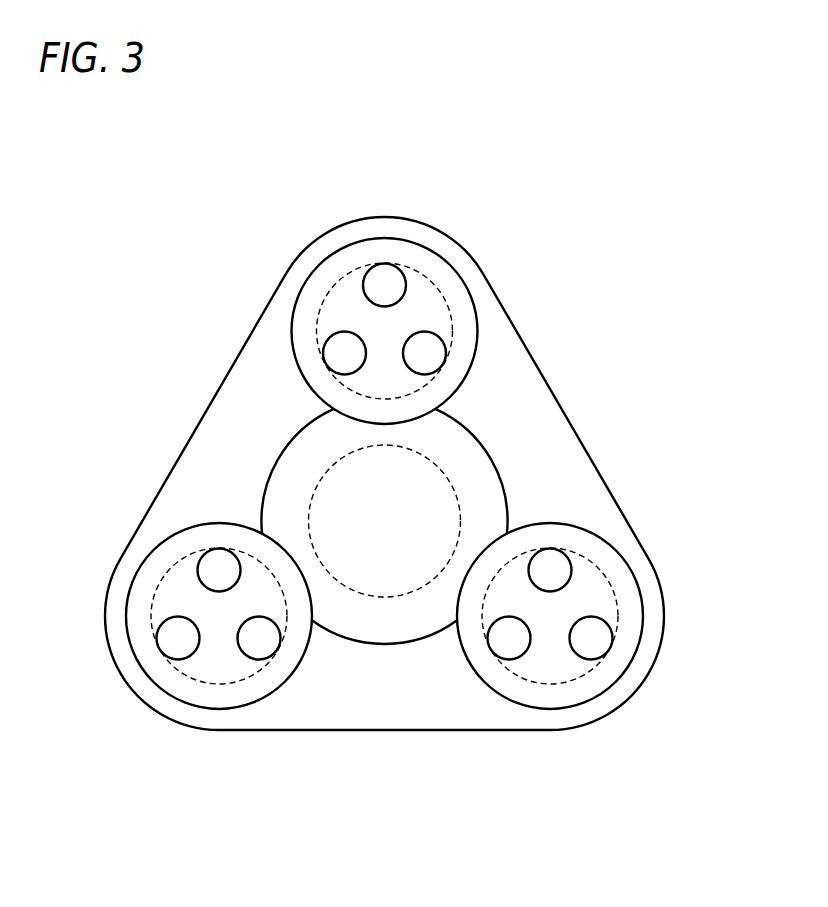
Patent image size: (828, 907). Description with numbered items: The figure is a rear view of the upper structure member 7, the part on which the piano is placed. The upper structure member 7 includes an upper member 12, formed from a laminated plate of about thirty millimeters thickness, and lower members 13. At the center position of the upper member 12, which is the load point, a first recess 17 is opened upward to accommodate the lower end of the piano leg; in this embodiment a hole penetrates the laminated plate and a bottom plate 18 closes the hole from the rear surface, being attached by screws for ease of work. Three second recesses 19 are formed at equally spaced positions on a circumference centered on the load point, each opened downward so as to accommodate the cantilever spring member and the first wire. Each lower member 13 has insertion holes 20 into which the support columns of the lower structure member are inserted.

The upper structure member 7 is at (622, 265).
The upper member 12 is at (550, 387).
The lower member 13 is at (612, 545).
The first recess 17 is at (346, 460).
The bottom plate 18 is at (260, 506).
The second recess 19 is at (615, 610).
The insertion hole 20 is at (552, 587).